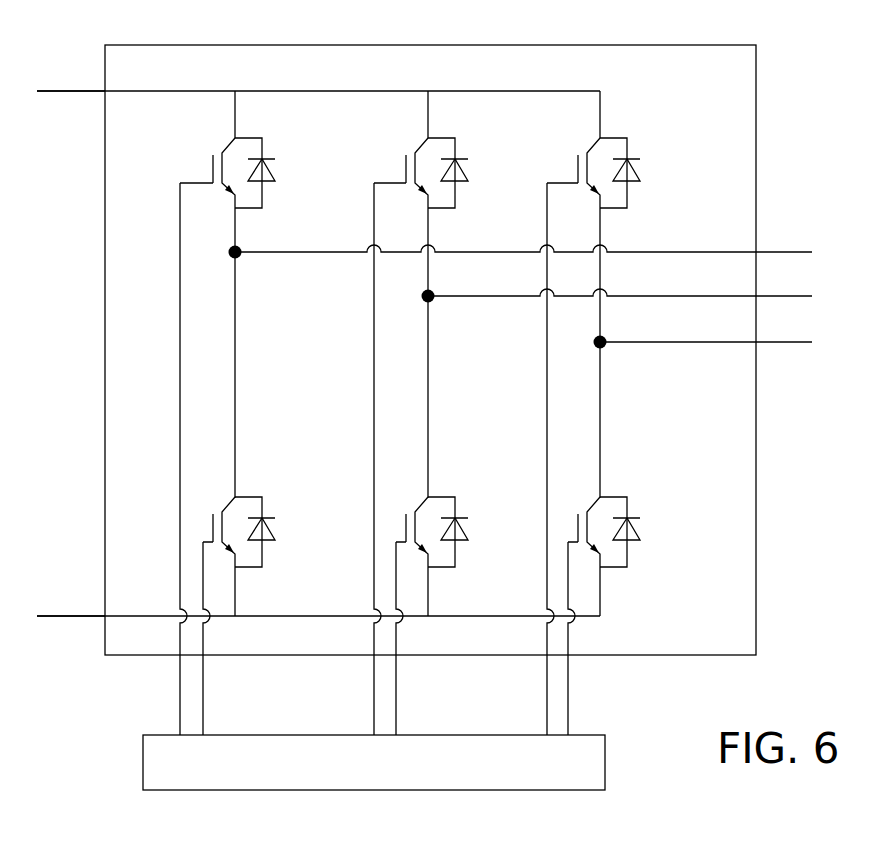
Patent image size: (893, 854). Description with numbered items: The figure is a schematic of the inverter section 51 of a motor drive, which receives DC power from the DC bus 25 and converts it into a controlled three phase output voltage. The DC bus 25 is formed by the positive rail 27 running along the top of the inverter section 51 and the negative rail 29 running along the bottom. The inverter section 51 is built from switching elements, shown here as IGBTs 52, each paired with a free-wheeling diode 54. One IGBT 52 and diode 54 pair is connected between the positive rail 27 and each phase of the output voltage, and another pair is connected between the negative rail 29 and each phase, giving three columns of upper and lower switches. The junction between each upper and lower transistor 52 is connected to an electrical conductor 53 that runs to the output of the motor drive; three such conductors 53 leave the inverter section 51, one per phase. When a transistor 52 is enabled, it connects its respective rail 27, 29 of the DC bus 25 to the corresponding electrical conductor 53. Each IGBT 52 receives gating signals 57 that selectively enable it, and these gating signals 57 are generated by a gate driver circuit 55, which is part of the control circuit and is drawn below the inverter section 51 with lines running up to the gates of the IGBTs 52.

The DC bus 25 is at (84, 102).
The positive rail 27 is at (70, 91).
The negative rail 29 is at (63, 616).
The inverter section 51 is at (545, 45).
The IGBT 52 is at (203, 172).
The electrical conductor 53 is at (783, 238).
The free-wheeling diode 54 is at (272, 161).
The gate driver circuit 55 is at (255, 790).
The gating signals 57 is at (203, 700).